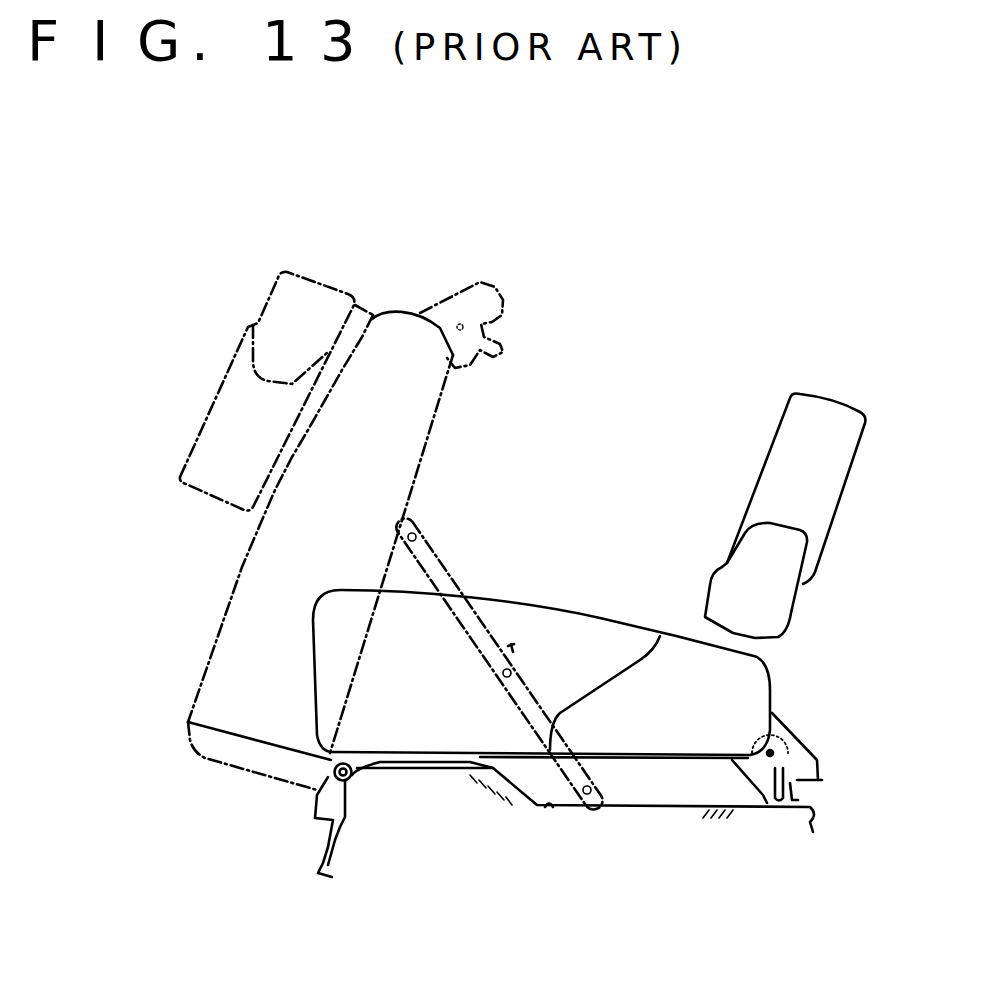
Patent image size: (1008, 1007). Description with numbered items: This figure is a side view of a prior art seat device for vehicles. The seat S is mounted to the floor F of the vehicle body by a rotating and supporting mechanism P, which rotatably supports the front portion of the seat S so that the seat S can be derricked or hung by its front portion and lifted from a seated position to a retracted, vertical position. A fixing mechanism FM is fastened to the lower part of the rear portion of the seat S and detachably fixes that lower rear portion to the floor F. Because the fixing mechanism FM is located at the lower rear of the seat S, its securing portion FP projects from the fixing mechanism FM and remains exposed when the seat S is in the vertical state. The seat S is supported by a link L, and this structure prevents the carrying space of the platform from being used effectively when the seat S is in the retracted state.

The seat S is at (212, 508).
The link L is at (430, 543).
The securing portion FP is at (487, 300).
The floor F is at (435, 277).
The fixing mechanism FM is at (808, 687).
The rotating and supporting mechanism P is at (232, 838).